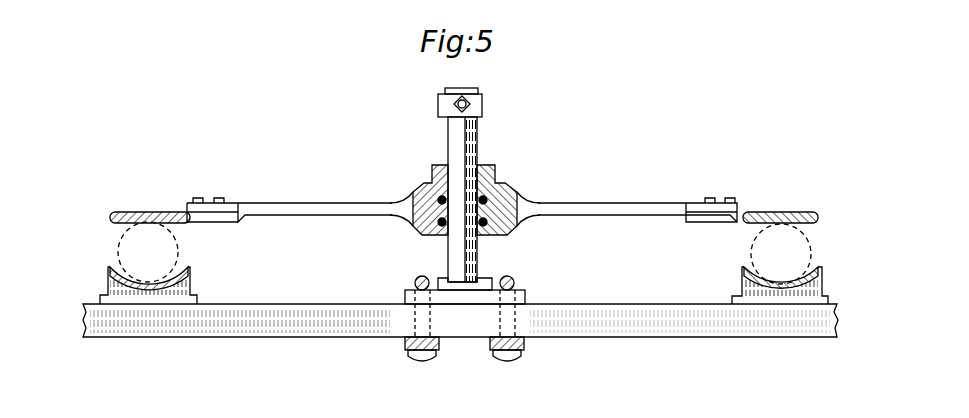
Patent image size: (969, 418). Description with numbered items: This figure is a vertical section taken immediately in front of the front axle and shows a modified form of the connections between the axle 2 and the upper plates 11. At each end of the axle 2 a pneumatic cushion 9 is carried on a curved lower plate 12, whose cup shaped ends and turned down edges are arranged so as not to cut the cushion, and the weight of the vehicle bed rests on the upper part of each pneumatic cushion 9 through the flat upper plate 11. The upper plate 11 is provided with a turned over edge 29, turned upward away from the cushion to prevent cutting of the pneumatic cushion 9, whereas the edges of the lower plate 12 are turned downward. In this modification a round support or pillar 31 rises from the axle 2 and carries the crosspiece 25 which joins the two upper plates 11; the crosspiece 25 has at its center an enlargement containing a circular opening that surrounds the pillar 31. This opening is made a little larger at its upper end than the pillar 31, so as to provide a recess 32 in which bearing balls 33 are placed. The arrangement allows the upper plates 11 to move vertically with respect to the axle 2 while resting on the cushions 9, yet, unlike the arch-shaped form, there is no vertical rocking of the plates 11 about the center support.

The axle 2 is at (592, 313).
The pneumatic cushion 9 is at (118, 245).
The upper plate 11 is at (150, 212).
The lower plate 12 is at (158, 278).
The crosspiece 25 is at (568, 206).
The turned over edge 29 is at (188, 272).
The round support or pillar 31 is at (462, 252).
The recess 32 is at (510, 195).
The bearing balls 33 is at (505, 178).